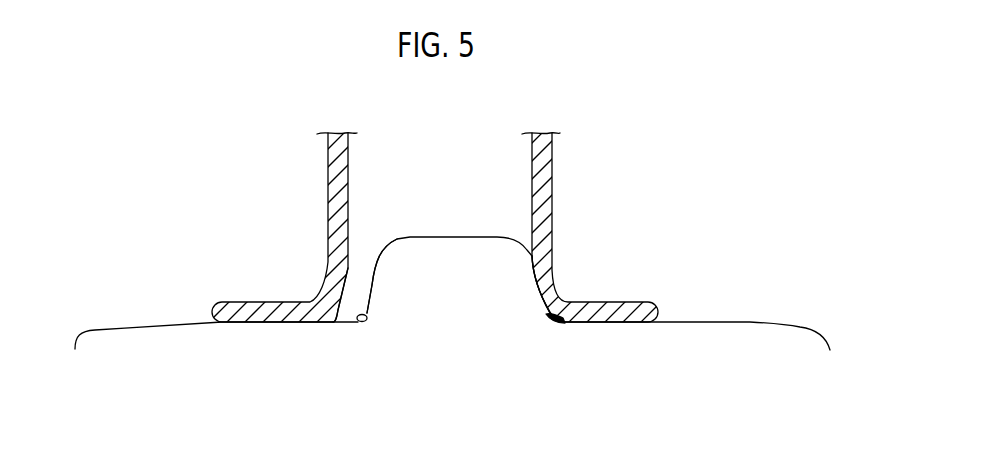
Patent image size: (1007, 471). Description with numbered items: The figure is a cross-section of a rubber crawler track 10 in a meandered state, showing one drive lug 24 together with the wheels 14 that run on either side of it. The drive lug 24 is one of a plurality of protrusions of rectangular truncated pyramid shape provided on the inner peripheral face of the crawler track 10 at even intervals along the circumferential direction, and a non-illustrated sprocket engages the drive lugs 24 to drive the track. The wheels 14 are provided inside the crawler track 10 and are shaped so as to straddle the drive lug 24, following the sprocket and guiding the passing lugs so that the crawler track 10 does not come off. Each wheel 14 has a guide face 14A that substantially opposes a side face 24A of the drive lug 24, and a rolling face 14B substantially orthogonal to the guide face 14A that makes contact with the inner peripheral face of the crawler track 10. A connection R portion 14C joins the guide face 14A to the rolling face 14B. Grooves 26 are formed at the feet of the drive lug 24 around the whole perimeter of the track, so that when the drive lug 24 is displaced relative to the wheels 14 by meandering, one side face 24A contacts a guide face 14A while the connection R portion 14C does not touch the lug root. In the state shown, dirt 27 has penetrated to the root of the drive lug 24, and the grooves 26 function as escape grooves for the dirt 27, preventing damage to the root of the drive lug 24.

The crawler track 10 is at (743, 342).
The wheels 14 is at (553, 190).
The guide faces 14A is at (347, 232).
The rolling faces 14B is at (268, 322).
The connection R portions 14C is at (333, 317).
The drive lugs 24 is at (447, 250).
The side faces 24A is at (370, 284).
The grooves 26 is at (368, 324).
The dirt 27 is at (555, 325).